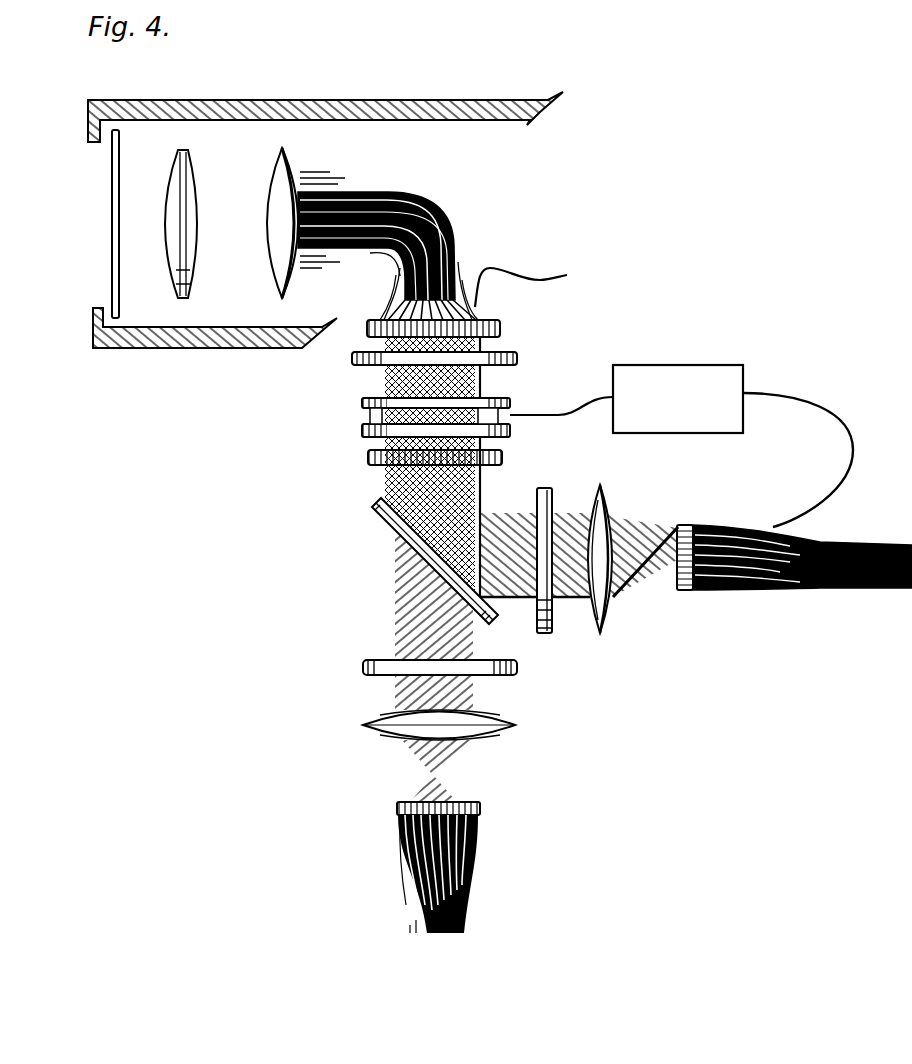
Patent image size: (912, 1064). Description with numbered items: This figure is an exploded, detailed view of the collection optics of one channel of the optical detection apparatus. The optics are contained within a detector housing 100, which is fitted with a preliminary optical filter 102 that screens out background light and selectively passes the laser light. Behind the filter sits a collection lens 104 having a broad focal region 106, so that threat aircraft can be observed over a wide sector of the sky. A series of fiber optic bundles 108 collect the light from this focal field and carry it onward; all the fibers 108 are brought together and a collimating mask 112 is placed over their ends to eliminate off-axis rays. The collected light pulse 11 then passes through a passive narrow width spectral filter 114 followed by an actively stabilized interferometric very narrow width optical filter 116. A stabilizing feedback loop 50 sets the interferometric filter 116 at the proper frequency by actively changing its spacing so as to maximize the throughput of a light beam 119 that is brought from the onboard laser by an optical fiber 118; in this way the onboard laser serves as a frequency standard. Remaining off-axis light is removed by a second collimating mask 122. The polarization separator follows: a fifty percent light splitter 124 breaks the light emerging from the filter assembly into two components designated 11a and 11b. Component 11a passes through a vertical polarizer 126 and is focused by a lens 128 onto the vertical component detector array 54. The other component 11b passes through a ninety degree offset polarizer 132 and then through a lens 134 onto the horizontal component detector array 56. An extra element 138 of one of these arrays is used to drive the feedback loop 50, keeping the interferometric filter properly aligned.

The detector housing 100 is at (88, 121).
The preliminary optical filter 102 is at (112, 205).
The collection lens 104 is at (198, 237).
The broad focal region 106 is at (279, 190).
The fiber optic bundles 108 is at (443, 218).
The optical fiber 118 is at (505, 270).
The collimating mask 112 is at (500, 327).
The passive narrow width spectral filter 114 is at (518, 357).
The actively stabilized interferometric very narrow width optical filter 116 is at (361, 413).
The second collimating mask 122 is at (368, 458).
The light beam 119 is at (482, 477).
The collected light pulse 11 is at (387, 484).
The first light component 11a is at (498, 518).
The second light component 11b is at (392, 598).
The 50% light splitter 124 is at (386, 518).
The vertical polarizer 126 is at (552, 633).
The lens 128 is at (608, 633).
The 90° offset polarizer 132 is at (363, 667).
The lens 134 is at (363, 727).
The horizontal component detector array 56 is at (397, 808).
The vertical component detector array 54 is at (683, 592).
The stabilizing feedback loop 50 is at (743, 372).
The extra element 138 is at (848, 457).